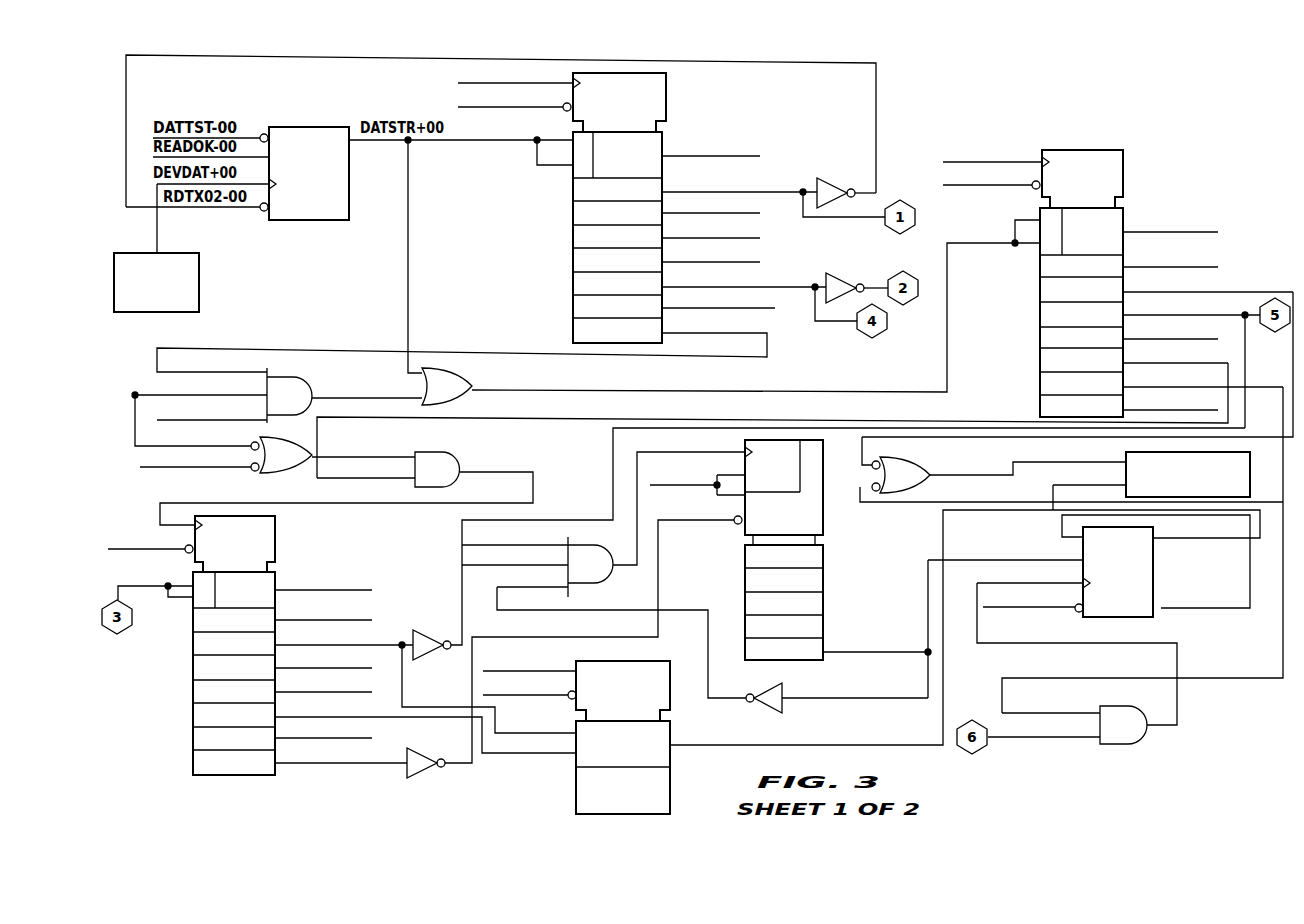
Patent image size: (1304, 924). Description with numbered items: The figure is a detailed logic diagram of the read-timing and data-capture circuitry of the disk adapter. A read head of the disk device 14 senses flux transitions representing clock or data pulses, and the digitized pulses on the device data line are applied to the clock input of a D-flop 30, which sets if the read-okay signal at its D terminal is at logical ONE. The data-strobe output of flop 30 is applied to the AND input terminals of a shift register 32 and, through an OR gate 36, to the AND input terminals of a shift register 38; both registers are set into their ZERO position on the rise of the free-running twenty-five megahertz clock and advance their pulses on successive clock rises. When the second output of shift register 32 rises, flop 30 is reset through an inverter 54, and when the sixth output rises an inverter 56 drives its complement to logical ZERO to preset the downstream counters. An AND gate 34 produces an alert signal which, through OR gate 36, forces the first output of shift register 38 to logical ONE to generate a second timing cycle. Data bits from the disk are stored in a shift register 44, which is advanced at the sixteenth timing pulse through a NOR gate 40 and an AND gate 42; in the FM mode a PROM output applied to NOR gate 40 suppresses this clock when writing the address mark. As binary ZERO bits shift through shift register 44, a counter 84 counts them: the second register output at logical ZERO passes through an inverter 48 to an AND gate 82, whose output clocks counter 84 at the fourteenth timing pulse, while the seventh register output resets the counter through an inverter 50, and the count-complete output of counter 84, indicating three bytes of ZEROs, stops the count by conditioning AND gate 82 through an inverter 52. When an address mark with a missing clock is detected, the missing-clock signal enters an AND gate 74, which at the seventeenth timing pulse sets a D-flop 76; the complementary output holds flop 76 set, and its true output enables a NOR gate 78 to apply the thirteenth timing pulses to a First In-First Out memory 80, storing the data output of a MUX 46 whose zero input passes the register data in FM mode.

The disk device 14 is at (199, 277).
The D-flop 30 is at (313, 220).
The shift register 32 is at (573, 247).
The AND gate 34 is at (293, 377).
The OR gate 36 is at (462, 396).
The shift register 38 is at (1040, 292).
The NOR gate 40 is at (285, 473).
The AND gate 42 is at (445, 452).
The shift register 44 is at (275, 541).
The MUX 46 is at (576, 772).
The inverter 48 is at (430, 641).
The inverter 50 is at (428, 755).
The inverter 52 is at (770, 690).
The inverter 54 is at (857, 158).
The inverter 56 is at (848, 277).
The AND gate 74 is at (1135, 742).
The D-flop 76 is at (1150, 617).
The NOR gate 78 is at (905, 447).
The First In-First Out memory 80 is at (1250, 478).
The AND gate 82 is at (600, 583).
The counter 84 is at (823, 580).